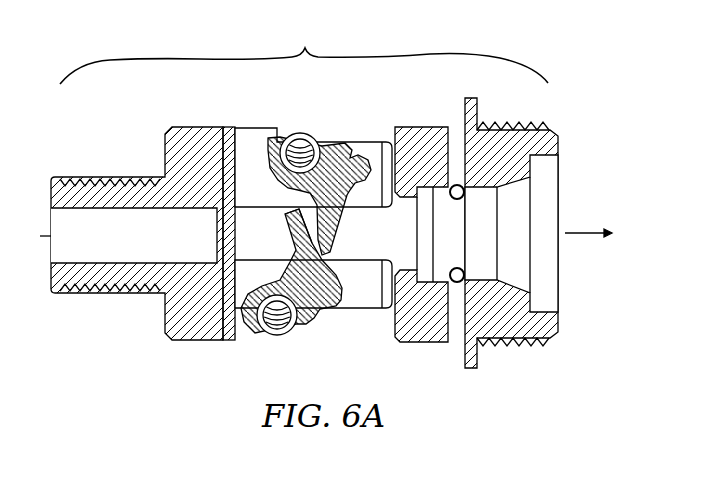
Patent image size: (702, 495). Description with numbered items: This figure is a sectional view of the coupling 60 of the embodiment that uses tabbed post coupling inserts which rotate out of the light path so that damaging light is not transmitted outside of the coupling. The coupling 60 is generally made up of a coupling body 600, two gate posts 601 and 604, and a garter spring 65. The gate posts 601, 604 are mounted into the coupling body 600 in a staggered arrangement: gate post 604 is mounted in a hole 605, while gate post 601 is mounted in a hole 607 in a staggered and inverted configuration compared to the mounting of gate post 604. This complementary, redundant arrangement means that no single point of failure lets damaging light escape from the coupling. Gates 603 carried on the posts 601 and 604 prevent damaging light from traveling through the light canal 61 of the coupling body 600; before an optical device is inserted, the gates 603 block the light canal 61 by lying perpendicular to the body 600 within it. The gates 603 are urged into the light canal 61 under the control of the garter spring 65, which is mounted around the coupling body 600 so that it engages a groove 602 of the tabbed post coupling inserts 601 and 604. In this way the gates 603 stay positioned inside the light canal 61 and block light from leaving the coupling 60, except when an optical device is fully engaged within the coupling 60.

The coupling 60 is at (304, 55).
The coupling body 600 is at (255, 128).
The gate post 601 is at (374, 142).
The groove 602 is at (248, 333).
The gates 603 is at (300, 247).
The gate post 604 is at (338, 312).
The hole 605 is at (337, 268).
The hole 607 is at (352, 157).
The garter spring 65 is at (298, 132).
The light canal 61 is at (418, 233).